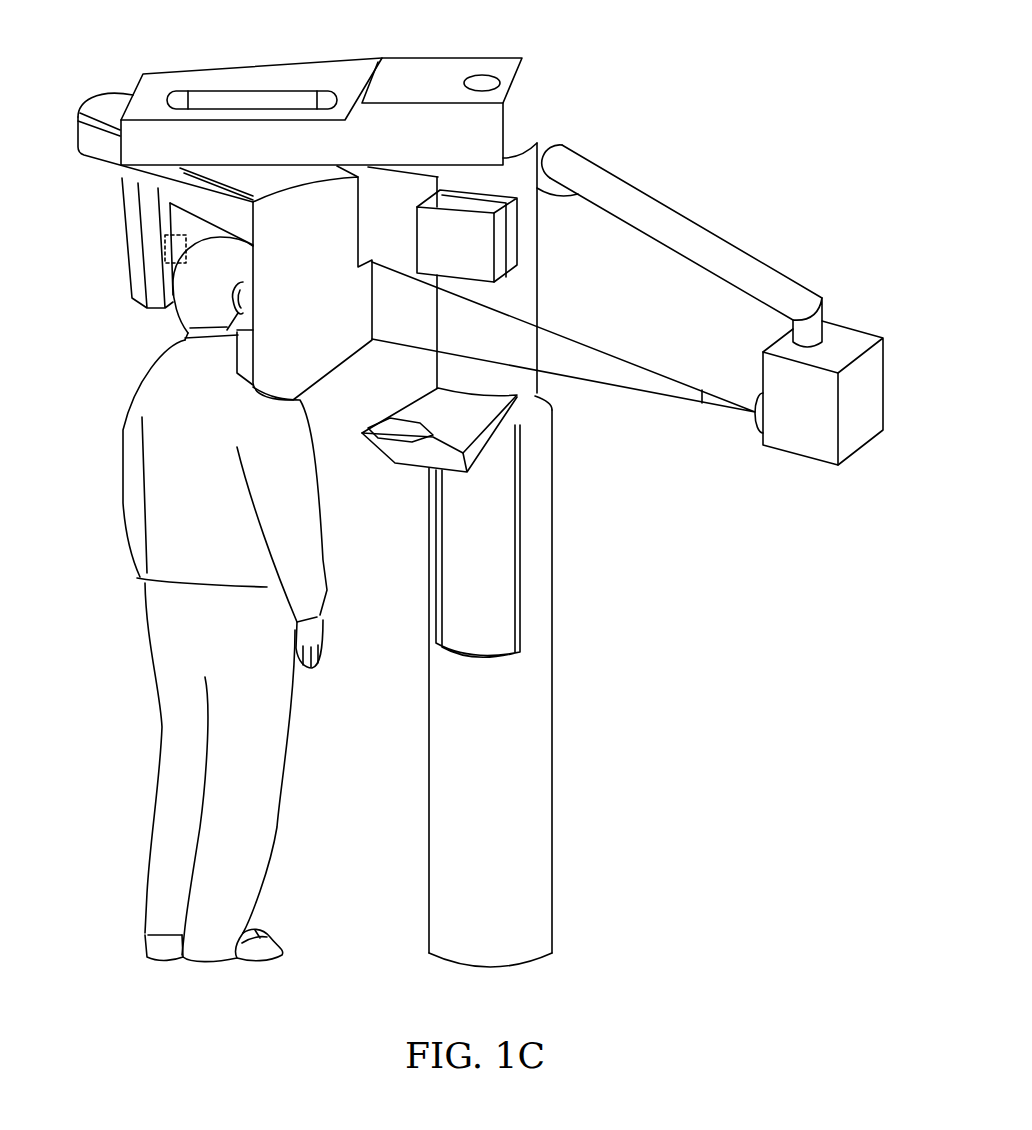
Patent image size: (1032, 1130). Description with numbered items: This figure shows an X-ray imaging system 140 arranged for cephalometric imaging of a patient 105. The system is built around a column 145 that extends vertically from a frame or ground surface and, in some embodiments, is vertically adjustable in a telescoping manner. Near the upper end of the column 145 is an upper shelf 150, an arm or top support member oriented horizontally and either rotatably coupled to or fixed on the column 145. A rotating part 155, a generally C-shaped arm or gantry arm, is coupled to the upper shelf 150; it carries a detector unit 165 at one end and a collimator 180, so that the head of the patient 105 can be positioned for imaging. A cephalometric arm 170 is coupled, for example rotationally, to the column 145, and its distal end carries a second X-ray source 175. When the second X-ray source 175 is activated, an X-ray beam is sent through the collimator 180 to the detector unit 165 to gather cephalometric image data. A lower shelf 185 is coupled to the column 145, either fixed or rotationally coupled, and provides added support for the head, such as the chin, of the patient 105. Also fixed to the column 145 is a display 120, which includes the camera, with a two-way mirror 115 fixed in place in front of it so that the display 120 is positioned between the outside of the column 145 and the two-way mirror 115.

The patient 105 is at (166, 718).
The two-way mirror 115 is at (485, 252).
The display 120 is at (510, 218).
The X-ray imaging system 140 is at (718, 37).
The column 145 is at (543, 765).
The upper shelf 150 is at (447, 77).
The rotating part 155 is at (98, 154).
The detector unit 165 is at (167, 248).
The cephalometric arm 170 is at (693, 230).
The second X-ray source 175 is at (857, 443).
The collimator 180 is at (343, 340).
The lower shelf 185 is at (480, 422).